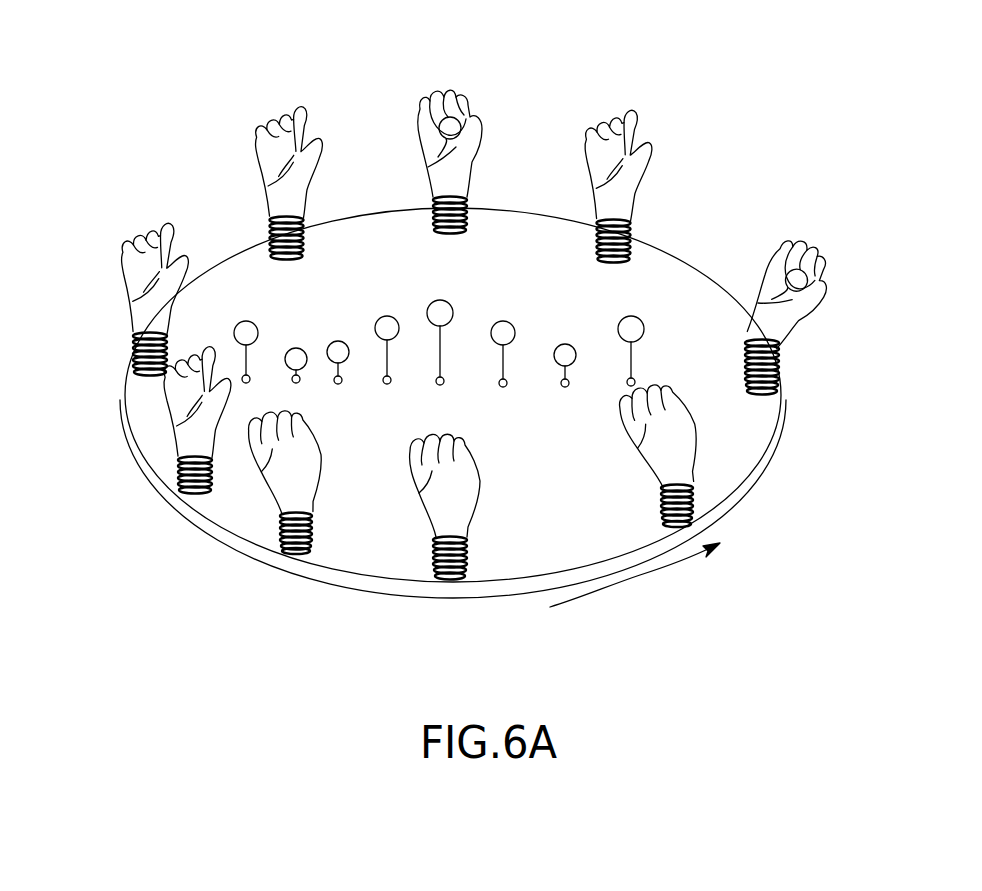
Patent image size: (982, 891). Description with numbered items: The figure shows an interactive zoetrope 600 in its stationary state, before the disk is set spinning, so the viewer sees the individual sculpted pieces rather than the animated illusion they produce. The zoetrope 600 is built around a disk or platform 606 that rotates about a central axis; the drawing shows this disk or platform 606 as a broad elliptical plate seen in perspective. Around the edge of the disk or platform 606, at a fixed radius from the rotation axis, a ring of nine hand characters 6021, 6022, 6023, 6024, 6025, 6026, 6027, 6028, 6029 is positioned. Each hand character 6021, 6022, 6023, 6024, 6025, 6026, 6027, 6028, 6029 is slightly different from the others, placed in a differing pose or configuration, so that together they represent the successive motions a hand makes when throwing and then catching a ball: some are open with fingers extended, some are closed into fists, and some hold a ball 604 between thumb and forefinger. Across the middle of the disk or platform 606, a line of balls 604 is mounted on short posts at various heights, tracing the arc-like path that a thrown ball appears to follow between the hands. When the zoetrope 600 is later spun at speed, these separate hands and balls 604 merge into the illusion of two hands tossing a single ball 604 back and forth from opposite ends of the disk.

The interactive zoetrope 600 is at (762, 188).
The ball 604 is at (505, 255).
The disk or platform 606 is at (249, 262).
The hand character 6021 is at (777, 342).
The hand character 6022 is at (688, 472).
The hand character 6023 is at (438, 525).
The hand character 6024 is at (280, 480).
The hand character 6025 is at (180, 428).
The hand character 6026 is at (137, 318).
The hand character 6027 is at (300, 108).
The hand character 6028 is at (458, 88).
The hand character 6029 is at (623, 120).